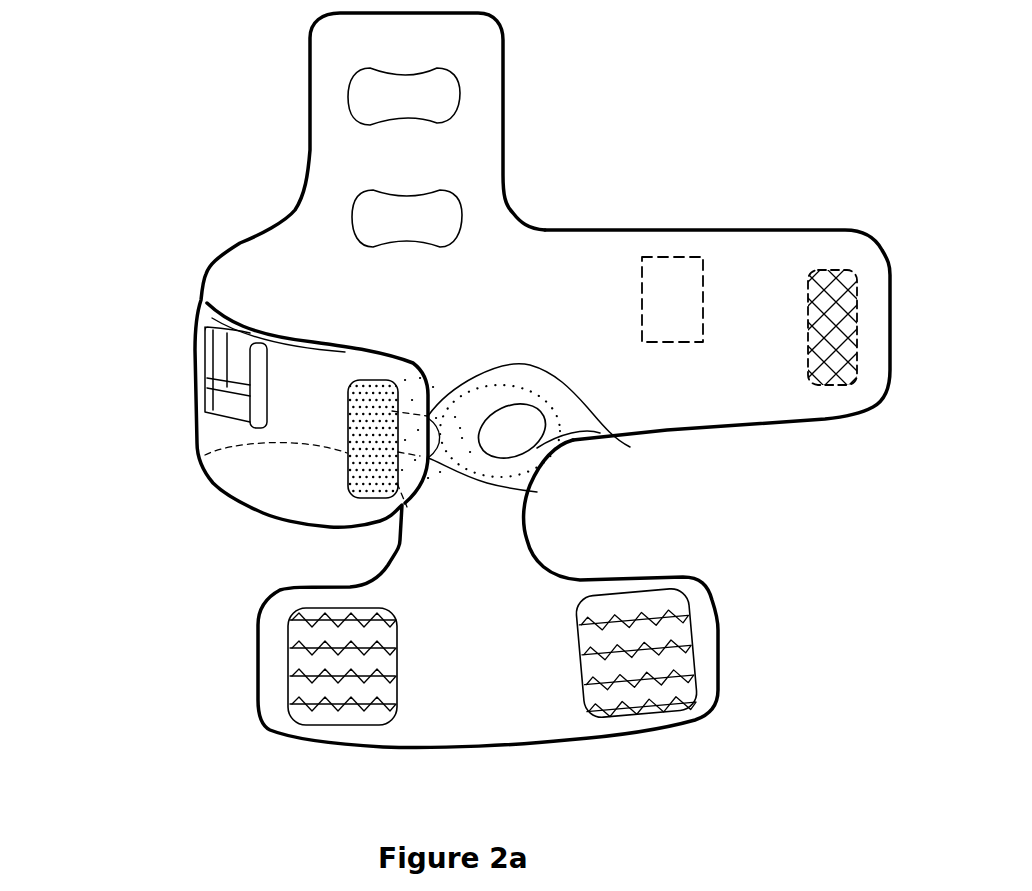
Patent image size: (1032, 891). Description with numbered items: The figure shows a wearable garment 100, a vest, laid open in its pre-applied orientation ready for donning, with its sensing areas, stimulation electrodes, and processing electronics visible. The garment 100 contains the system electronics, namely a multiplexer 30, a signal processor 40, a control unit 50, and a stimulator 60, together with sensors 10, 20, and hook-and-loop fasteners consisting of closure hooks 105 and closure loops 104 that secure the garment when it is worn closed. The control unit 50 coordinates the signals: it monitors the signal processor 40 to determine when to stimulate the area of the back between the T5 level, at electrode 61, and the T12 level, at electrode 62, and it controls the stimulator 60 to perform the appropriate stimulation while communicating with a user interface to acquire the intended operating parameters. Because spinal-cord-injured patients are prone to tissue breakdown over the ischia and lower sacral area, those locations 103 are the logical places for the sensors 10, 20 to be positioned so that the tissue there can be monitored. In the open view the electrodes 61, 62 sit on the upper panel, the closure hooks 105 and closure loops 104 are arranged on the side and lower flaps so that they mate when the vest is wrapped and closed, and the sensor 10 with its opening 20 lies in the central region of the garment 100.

The sensor 10 is at (537, 492).
The sensor 20 is at (502, 443).
The multiplexer 30 is at (218, 352).
The signal processor 40 is at (240, 358).
The control unit 50 is at (235, 410).
The stimulator 60 is at (682, 286).
The electrode 61 is at (440, 97).
The electrode 62 is at (380, 208).
The wearable garment 100 is at (580, 280).
The locations 103 is at (600, 433).
The closure loops 104 is at (373, 687).
The closure hooks 105 is at (353, 468).